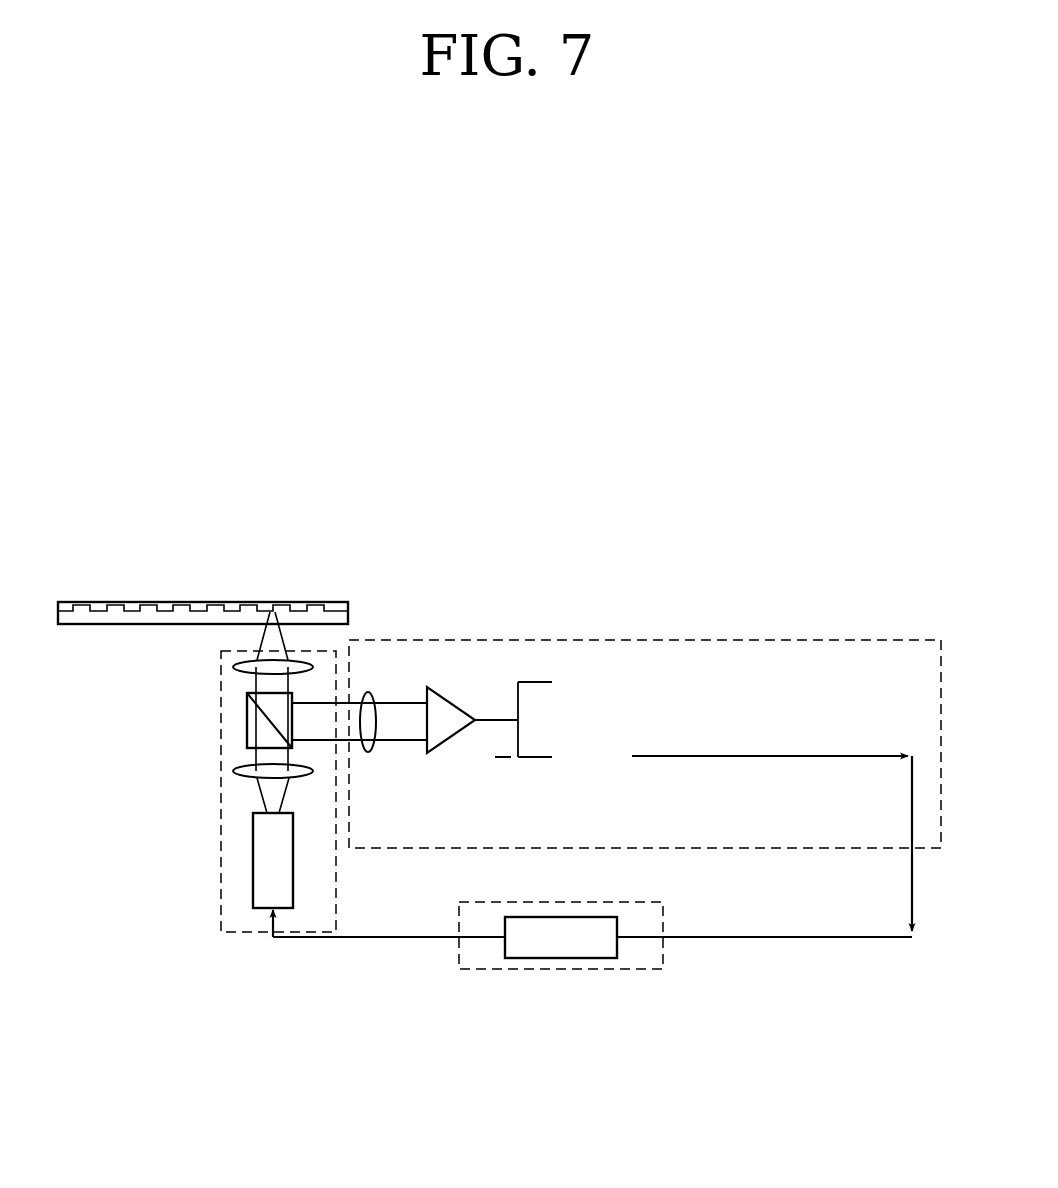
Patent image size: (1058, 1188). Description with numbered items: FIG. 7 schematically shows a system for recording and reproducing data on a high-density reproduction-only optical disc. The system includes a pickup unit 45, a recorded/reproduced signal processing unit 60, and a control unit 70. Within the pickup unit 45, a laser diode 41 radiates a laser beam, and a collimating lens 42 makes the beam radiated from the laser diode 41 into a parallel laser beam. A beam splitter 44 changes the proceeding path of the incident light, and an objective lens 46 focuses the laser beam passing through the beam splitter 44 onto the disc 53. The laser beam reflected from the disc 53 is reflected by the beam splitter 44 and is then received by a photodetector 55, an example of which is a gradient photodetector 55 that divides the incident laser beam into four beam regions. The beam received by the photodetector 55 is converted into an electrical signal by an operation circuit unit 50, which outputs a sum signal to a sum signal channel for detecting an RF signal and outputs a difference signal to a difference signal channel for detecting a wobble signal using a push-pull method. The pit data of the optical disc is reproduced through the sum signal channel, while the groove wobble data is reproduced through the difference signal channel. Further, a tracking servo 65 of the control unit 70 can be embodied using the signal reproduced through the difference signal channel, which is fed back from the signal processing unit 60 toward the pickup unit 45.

The disc 53 is at (181, 598).
The pickup unit 45 is at (212, 911).
The objective lens 46 is at (233, 667).
The beam splitter 44 is at (247, 720).
The collimating lens 42 is at (233, 771).
The laser diode 41 is at (253, 860).
The photodetector 55 is at (370, 692).
The operation circuit unit 50 is at (451, 697).
The recorded/reproduced signal processing unit 60 is at (682, 631).
The control unit 70 is at (651, 975).
The tracking servo 65 is at (561, 937).